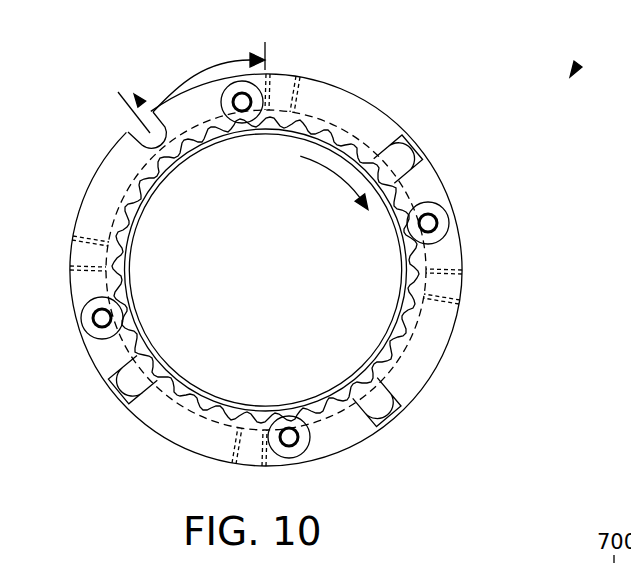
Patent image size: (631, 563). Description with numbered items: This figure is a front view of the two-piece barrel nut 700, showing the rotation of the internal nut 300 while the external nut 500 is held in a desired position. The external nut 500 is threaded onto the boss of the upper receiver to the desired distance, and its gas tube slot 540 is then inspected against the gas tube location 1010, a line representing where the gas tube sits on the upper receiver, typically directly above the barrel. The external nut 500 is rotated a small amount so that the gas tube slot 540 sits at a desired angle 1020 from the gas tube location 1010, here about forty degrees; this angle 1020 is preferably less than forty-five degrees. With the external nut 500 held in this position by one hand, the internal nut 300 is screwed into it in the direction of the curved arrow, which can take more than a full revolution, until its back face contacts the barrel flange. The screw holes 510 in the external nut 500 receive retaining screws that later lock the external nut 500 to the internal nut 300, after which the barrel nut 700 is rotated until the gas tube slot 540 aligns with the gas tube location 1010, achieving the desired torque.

The internal nut 300 is at (142, 207).
The external nut 500 is at (435, 173).
The screw holes 510 is at (258, 105).
The gas tube slot 540 is at (130, 131).
The two-piece barrel nut 700 is at (578, 64).
The gas tube location 1010 is at (267, 53).
The desired angle 1020 is at (212, 70).